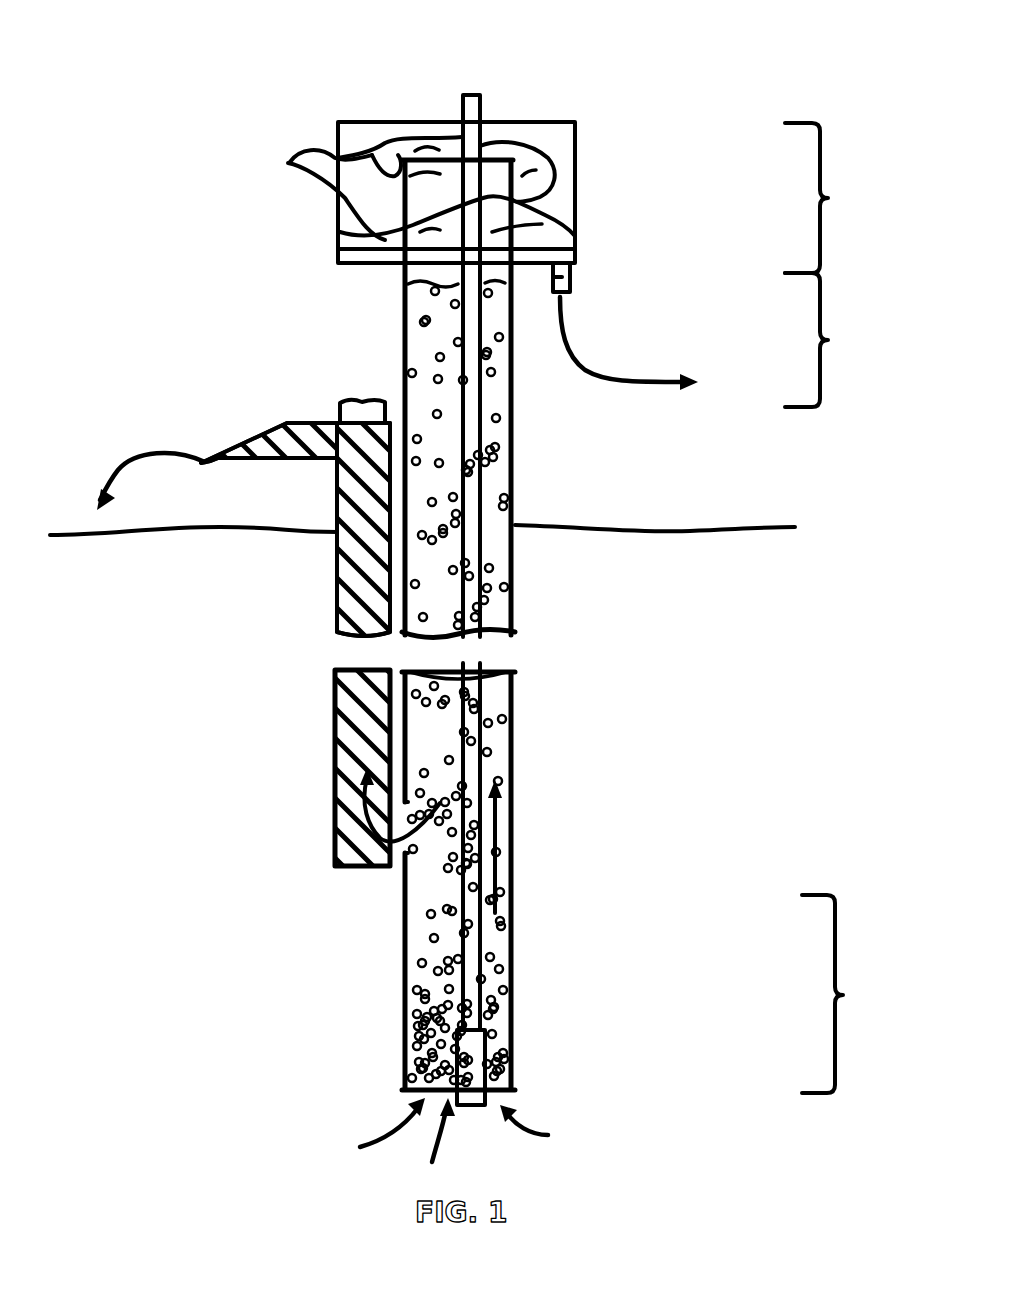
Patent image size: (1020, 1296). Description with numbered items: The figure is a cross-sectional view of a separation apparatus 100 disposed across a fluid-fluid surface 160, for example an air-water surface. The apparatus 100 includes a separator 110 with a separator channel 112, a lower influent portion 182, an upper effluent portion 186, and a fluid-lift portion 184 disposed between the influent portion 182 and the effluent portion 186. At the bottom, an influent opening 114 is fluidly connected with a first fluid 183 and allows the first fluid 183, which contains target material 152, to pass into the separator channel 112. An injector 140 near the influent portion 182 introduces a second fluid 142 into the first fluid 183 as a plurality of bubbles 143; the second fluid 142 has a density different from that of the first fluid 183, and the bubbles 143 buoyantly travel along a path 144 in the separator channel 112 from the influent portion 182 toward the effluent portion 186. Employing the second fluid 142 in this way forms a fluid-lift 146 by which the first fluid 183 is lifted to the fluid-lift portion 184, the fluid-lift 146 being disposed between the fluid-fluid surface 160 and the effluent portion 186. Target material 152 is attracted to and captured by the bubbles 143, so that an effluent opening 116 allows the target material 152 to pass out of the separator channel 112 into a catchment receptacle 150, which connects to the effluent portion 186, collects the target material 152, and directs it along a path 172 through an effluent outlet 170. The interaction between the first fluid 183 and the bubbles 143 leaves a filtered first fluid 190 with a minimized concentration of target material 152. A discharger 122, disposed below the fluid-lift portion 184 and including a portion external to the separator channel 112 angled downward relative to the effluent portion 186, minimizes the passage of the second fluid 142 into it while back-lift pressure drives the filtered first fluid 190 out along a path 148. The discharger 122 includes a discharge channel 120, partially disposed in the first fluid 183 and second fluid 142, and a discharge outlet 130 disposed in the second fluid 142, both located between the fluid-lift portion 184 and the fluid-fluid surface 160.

The apparatus 100 is at (118, 76).
The separator 110 is at (403, 382).
The separator channel 112 is at (413, 347).
The influent opening 114 is at (418, 1092).
The effluent opening 116 is at (398, 156).
The discharge channel 120 is at (345, 727).
The discharger 122 is at (400, 858).
The discharge outlet 130 is at (328, 420).
The injector 140 is at (487, 1052).
The second fluid 142 is at (473, 88).
The plurality of bubbles 143 is at (411, 994).
The path 144 is at (500, 833).
The fluid-lift 146 is at (403, 285).
The path 148 is at (338, 820).
The catchment receptacle 150 is at (577, 190).
The target material 152 is at (310, 195).
The fluid-fluid surface 160 is at (685, 530).
The effluent outlet 170 is at (570, 277).
The path 172 is at (577, 350).
The influent portion 182 is at (852, 994).
The first fluid 183 is at (451, 1137).
The fluid-lift portion 184 is at (835, 340).
The effluent portion 186 is at (835, 198).
The filtered first fluid 190 is at (203, 448).